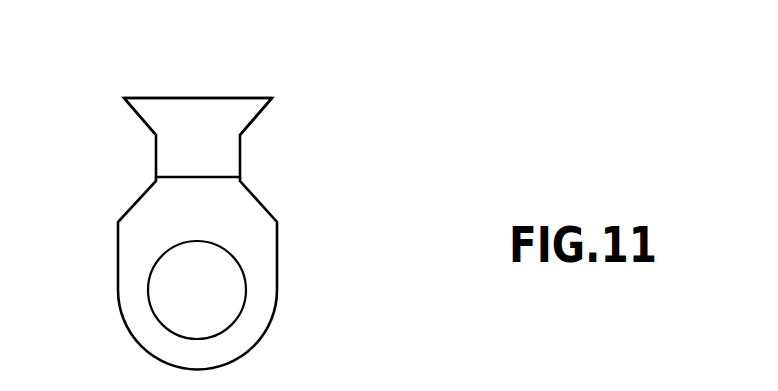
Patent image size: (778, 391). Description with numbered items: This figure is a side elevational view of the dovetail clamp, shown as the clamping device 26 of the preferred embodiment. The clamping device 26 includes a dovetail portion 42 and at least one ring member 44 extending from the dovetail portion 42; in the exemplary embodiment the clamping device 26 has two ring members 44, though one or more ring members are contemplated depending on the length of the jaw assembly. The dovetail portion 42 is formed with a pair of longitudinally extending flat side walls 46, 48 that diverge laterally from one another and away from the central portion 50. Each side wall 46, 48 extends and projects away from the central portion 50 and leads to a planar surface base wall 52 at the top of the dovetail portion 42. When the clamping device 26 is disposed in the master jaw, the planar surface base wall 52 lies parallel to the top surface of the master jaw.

The clamping device 26 is at (348, 97).
The dovetail portion 42 is at (246, 90).
The ring member 44 is at (265, 260).
The flat side wall 46 is at (140, 119).
The flat side wall 48 is at (255, 120).
The central portion 50 is at (155, 158).
The planar surface base wall 52 is at (160, 97).